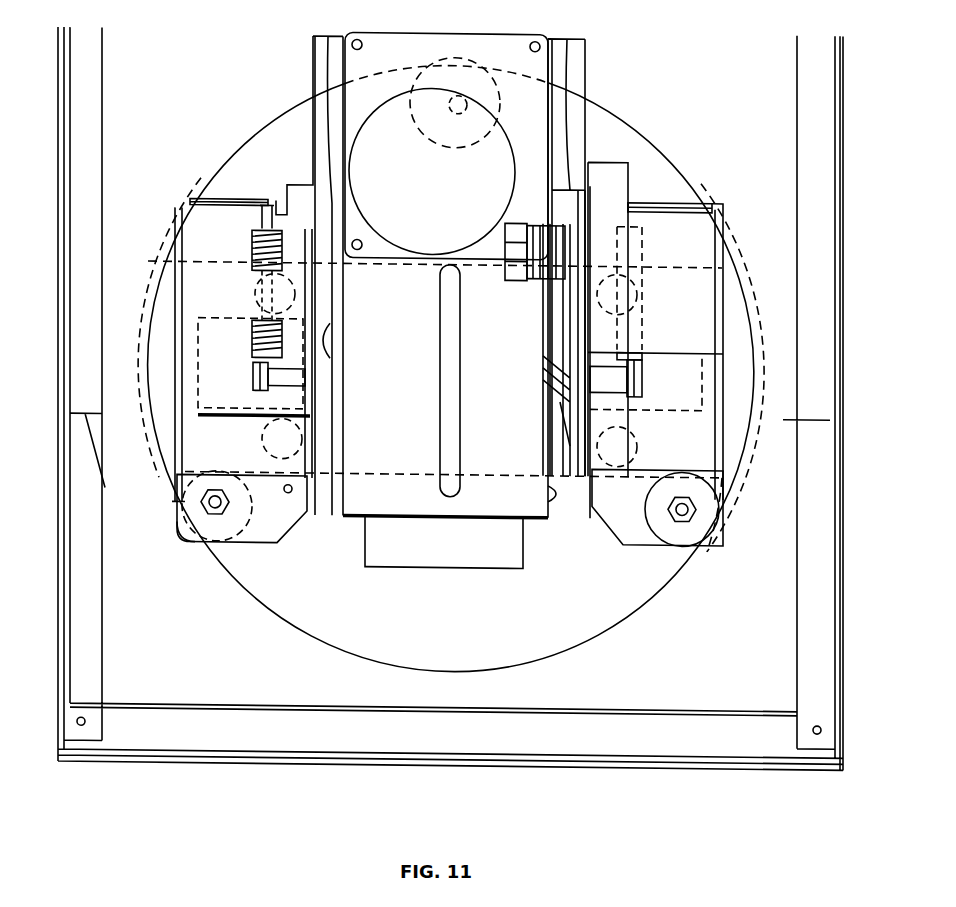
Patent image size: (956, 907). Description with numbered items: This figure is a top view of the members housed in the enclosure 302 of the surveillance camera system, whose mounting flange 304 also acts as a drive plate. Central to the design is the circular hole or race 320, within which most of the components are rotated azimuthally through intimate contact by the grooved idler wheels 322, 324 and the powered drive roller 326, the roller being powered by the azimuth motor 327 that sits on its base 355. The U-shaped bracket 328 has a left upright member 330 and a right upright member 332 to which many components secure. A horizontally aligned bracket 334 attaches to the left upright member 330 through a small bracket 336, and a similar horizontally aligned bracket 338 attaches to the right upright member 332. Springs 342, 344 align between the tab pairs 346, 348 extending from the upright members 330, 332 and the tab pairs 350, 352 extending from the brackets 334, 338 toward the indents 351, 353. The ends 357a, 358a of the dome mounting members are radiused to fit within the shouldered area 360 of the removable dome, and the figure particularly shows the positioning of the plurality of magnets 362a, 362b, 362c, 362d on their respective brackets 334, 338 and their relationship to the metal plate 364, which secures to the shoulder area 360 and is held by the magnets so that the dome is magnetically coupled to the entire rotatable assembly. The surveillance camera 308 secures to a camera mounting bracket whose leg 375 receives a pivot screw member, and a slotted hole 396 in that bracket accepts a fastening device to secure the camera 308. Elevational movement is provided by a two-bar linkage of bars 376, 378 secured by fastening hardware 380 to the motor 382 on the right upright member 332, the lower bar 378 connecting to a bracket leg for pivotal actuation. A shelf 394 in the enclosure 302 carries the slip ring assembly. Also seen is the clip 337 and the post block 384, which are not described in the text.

The enclosure 302 is at (162, 760).
The mounting flange 304 is at (131, 389).
The surveillance camera 308 is at (523, 554).
The circular hole or race 320 is at (270, 142).
The grooved idler wheel 322 is at (188, 530).
The grooved idler wheel 324 is at (713, 547).
The powered drive roller 326 is at (460, 55).
The azimuth motor 327 is at (515, 166).
The U-shaped bracket 328 is at (567, 34).
The left upright member 330 is at (327, 263).
The right upright member 332 is at (583, 299).
The horizontally aligned bracket 334 is at (278, 532).
The small bracket 336 is at (445, 498).
The clip 337 is at (550, 491).
The horizontally aligned bracket 338 is at (624, 534).
The spring 342 is at (252, 250).
The spring 344 is at (645, 333).
The tab pair 346 is at (256, 374).
The tab pair 348 is at (650, 369).
The tab pair 350 is at (265, 195).
The indent 351 is at (235, 195).
The tab pair 352 is at (650, 196).
The indent 353 is at (631, 195).
The base 355 is at (404, 34).
The end of dome mounting member 357a is at (150, 265).
The end of dome mounting member 358a is at (762, 258).
The shouldered area 360 is at (172, 211).
The magnet 362a is at (263, 436).
The magnet 362b is at (258, 296).
The magnet 362c is at (637, 438).
The magnet 362d is at (642, 278).
The metal plate 364 is at (165, 500).
The leg 375 is at (333, 336).
The bar 376 is at (543, 346).
The lower bar 378 is at (563, 459).
The fastening hardware 380 is at (498, 276).
The motor 382 is at (717, 199).
The post block 384 is at (600, 153).
The shelf 394 is at (168, 479).
The slotted hole 396 is at (440, 400).